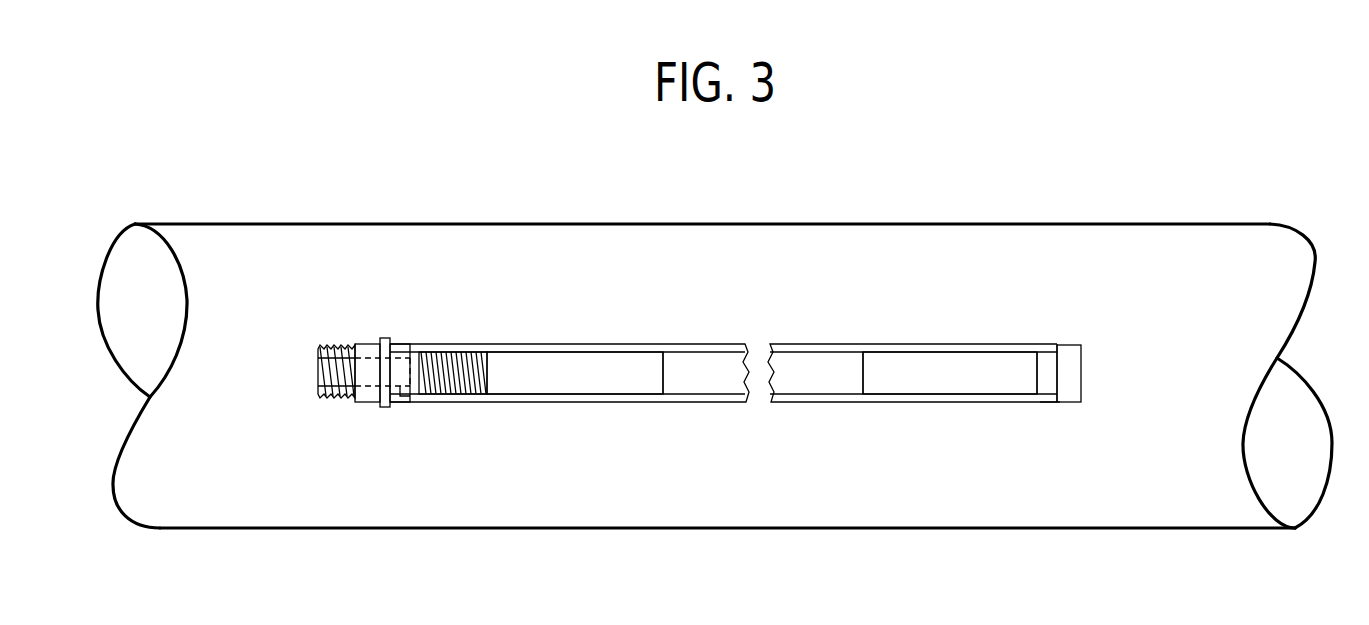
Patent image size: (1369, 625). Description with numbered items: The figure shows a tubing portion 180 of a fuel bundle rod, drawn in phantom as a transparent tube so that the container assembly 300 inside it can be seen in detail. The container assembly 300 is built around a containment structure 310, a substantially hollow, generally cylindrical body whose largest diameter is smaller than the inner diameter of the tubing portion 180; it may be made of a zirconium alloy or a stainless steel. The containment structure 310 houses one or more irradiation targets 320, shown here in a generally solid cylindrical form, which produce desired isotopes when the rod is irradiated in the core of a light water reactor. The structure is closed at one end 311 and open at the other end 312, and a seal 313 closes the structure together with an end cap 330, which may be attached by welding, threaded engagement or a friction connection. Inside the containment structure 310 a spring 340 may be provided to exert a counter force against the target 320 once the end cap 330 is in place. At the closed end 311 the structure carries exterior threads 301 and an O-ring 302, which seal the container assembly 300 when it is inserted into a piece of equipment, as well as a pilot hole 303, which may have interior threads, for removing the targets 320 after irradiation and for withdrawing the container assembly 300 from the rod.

The tubing portion 180 is at (957, 225).
The container assembly 300 is at (798, 418).
The exterior threads 301 is at (339, 400).
The O-ring 302 is at (384, 409).
The pilot hole 303 is at (402, 398).
The containment structure 310 is at (922, 344).
The closed end 311 is at (300, 373).
The open end 312 is at (1098, 377).
The seal 313 is at (1057, 404).
The irradiation target 320 is at (683, 360).
The end cap 330 is at (1071, 345).
The spring 340 is at (457, 354).